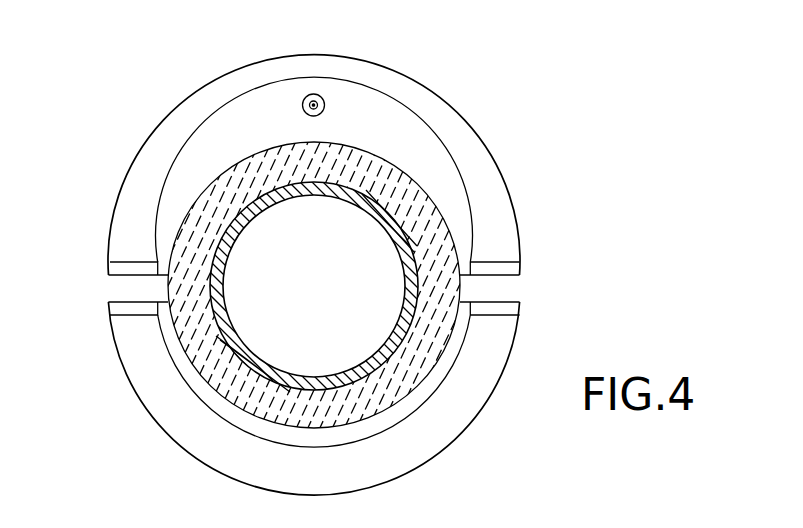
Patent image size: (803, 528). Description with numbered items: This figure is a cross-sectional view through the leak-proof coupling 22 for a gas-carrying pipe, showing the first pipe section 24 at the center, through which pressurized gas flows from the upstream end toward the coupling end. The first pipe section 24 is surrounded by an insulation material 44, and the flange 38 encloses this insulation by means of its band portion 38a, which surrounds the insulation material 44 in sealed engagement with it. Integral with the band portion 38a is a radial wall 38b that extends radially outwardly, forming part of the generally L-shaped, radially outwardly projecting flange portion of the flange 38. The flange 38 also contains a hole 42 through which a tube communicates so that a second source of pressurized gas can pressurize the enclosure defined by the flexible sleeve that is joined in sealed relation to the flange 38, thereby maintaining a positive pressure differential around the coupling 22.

The leak-proof coupling 22 is at (346, 257).
The flange 38 is at (346, 257).
The band portion 38a is at (420, 190).
The radial wall 38b is at (202, 148).
The hole 42 is at (325, 102).
The insulation material 44 is at (212, 208).
The first pipe section 24 is at (258, 214).